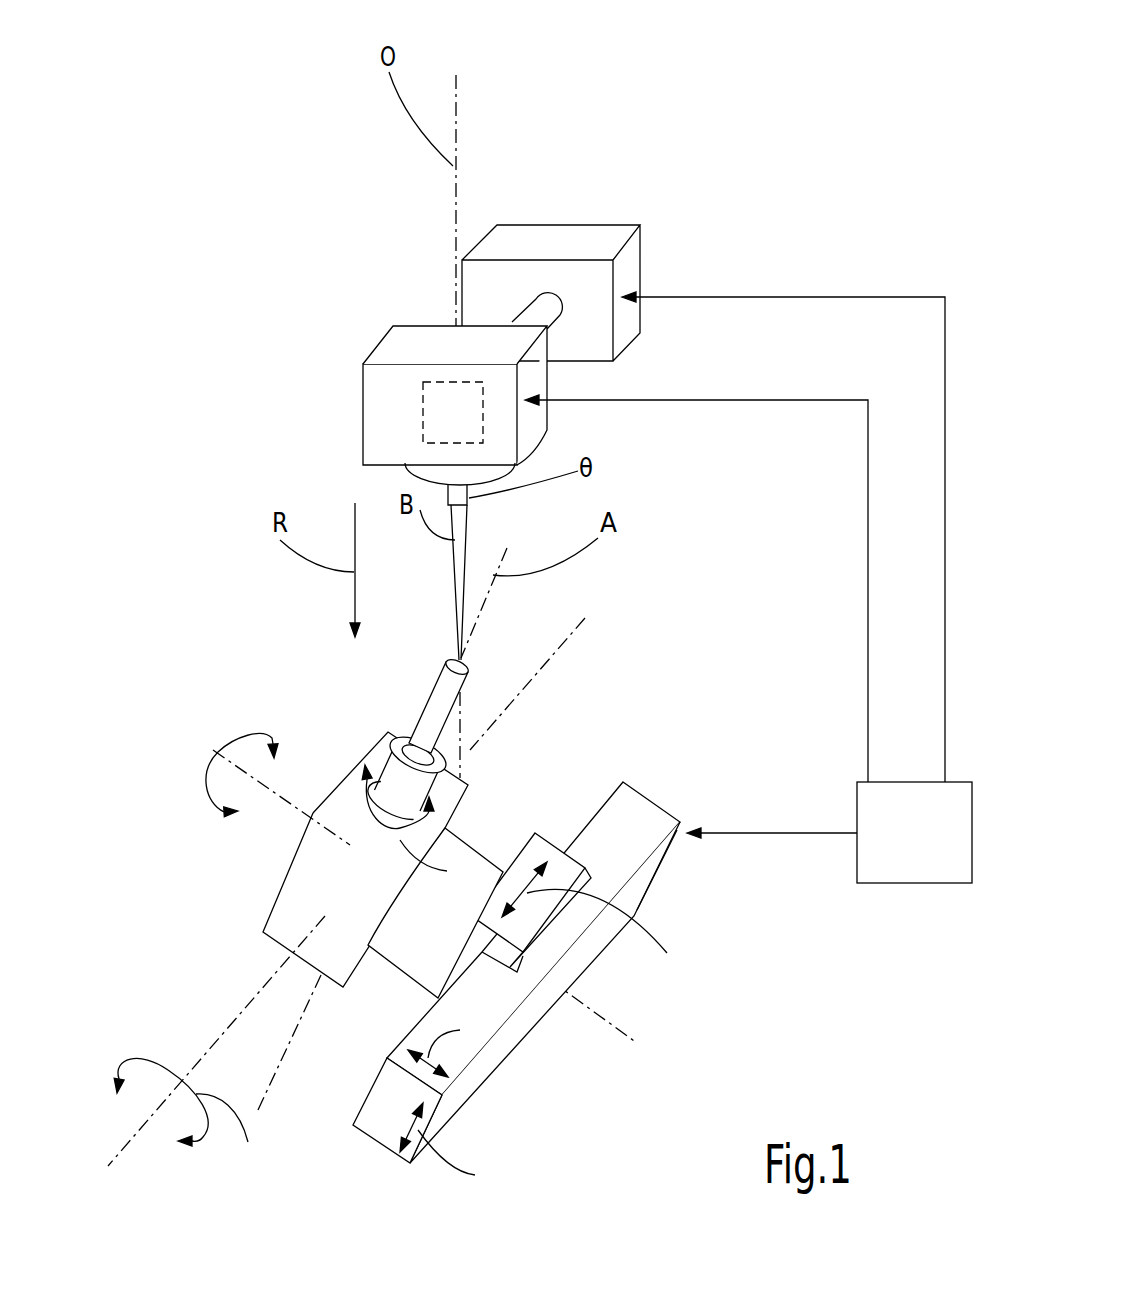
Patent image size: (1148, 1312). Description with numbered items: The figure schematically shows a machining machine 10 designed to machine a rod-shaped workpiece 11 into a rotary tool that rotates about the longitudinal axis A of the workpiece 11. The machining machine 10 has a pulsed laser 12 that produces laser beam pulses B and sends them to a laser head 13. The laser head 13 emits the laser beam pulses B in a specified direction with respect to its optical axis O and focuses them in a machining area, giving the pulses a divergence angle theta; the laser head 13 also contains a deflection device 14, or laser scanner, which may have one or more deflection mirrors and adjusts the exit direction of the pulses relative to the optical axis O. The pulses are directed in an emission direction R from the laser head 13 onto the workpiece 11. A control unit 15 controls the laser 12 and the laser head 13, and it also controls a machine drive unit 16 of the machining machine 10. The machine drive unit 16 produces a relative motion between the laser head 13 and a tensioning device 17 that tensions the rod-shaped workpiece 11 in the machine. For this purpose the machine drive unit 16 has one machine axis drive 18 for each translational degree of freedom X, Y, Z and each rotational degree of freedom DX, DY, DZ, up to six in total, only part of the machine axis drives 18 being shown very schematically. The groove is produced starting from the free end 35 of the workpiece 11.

The machining machine 10 is at (876, 191).
The pulsed laser 12 is at (575, 234).
The laser head 13 is at (363, 395).
The deflection device 14 is at (422, 415).
The control unit 15 is at (950, 832).
The machine drive unit 16 is at (627, 701).
The tensioning device 17 is at (388, 760).
The machine axis drive 18 is at (571, 822).
The rod-shaped workpiece 11 is at (433, 713).
The free end 35 is at (467, 668).